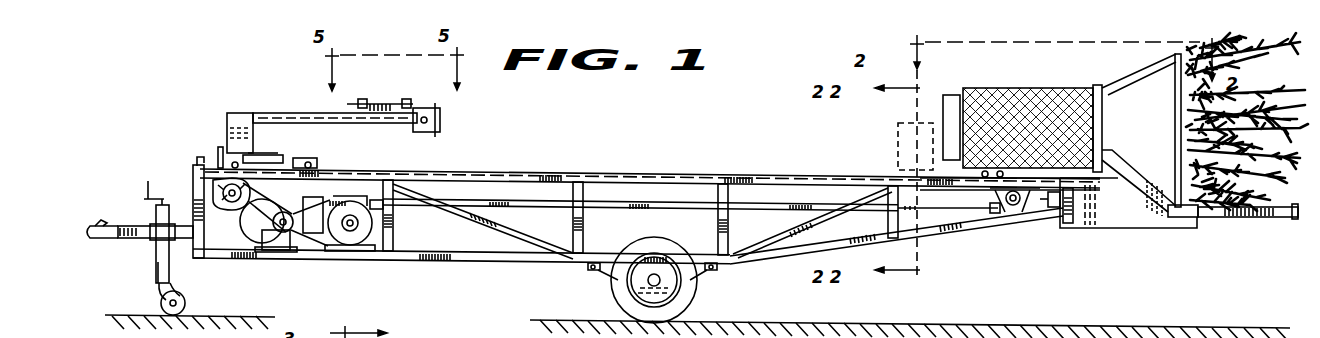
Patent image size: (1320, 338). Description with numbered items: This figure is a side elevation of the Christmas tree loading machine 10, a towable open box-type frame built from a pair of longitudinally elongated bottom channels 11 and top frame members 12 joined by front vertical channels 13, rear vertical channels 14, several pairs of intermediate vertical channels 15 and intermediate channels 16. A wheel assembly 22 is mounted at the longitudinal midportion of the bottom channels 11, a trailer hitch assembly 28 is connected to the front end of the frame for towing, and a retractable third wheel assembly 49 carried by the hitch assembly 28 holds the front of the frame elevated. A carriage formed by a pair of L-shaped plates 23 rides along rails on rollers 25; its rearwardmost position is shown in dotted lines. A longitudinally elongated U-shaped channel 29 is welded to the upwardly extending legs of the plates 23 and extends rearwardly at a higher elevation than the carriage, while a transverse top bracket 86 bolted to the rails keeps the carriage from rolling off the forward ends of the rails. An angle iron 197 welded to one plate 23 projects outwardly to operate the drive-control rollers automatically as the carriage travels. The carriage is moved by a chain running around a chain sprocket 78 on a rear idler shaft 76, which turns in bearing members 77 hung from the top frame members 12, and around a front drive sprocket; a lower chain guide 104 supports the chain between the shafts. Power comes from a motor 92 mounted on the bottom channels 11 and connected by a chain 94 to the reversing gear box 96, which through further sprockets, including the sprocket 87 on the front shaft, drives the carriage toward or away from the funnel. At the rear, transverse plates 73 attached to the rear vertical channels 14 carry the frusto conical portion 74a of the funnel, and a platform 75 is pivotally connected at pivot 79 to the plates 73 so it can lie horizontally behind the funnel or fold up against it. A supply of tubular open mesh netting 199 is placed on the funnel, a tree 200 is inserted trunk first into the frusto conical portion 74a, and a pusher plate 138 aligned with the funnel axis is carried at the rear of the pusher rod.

The Christmas tree loading machine 10 is at (566, 170).
The bottom channels 11 is at (790, 266).
The top frame members 12 is at (698, 176).
The front vertical channels 13 is at (192, 176).
The rear vertical channels 14 is at (1066, 224).
The intermediate vertical channels 15 is at (394, 236).
The intermediate channels 16 is at (882, 230).
The wheel assembly 22 is at (699, 300).
The L-shaped plates 23 is at (245, 118).
The roller 25 is at (319, 163).
The trailer hitch assembly 28 is at (125, 240).
The U-shaped channel 29 is at (302, 112).
The retractable third wheel assembly 49 is at (155, 267).
The transverse plates 73 is at (1140, 232).
The frusto conical portion 74a is at (1132, 92).
The platform 75 is at (1235, 218).
The rear idler shaft 76 is at (986, 205).
The bearing members 77 is at (1020, 212).
The chain sprocket 78 is at (1006, 208).
The pivotal connection 79 is at (1176, 218).
The transverse top bracket 86 is at (201, 157).
The sprocket 87 is at (243, 206).
The motor 92 is at (356, 240).
The chain 94 is at (311, 246).
The reversing gear box 96 is at (272, 254).
The lower chain guide 104 is at (770, 205).
The pusher plate 138 is at (441, 118).
The angle iron 197 is at (276, 156).
The tubular open mesh netting 199 is at (1037, 87).
The tree 200 is at (1294, 220).